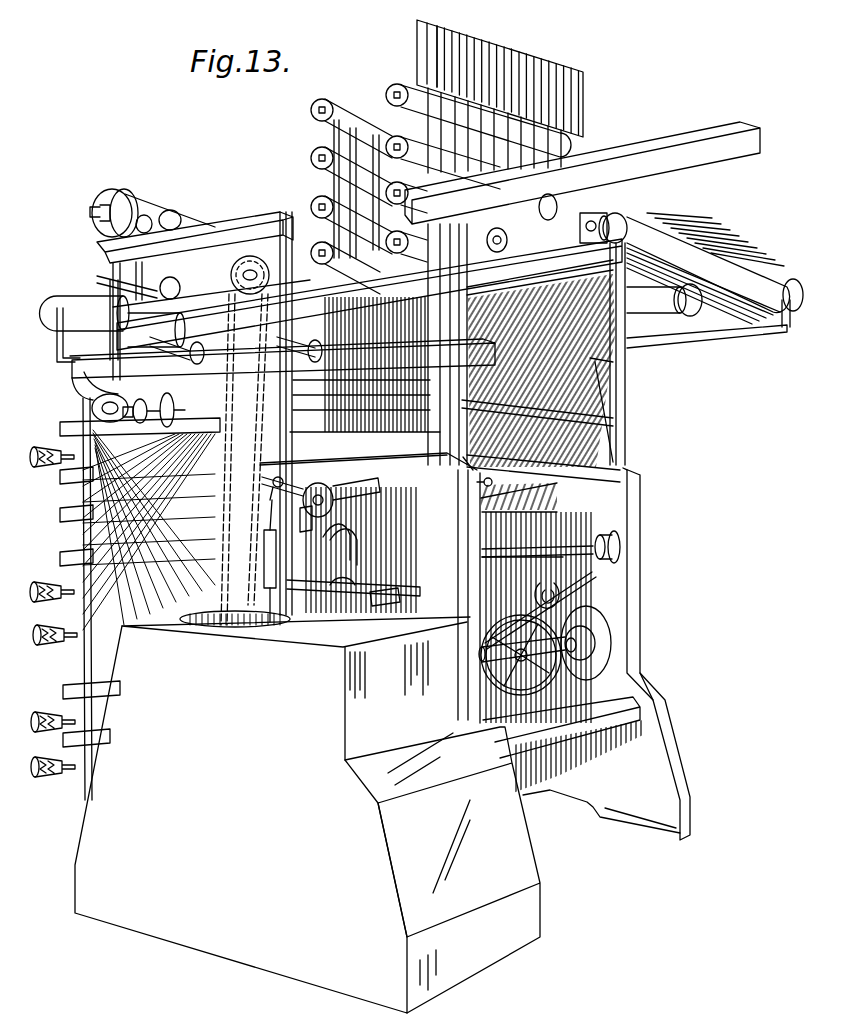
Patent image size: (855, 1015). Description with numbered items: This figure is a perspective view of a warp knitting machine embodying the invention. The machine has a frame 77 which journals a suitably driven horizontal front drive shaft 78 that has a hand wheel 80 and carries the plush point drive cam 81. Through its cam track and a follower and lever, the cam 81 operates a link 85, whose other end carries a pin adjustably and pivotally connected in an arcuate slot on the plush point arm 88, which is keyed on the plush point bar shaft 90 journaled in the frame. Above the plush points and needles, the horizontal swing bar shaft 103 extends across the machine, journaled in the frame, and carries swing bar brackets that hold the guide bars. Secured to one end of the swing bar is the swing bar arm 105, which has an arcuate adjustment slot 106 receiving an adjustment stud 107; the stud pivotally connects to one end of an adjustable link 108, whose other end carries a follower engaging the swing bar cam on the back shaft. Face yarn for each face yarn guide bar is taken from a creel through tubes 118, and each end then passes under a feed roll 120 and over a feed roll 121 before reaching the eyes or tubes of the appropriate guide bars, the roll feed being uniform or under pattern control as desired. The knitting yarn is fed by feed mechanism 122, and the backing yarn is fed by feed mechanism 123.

The frame 77 is at (638, 493).
The front drive shaft 78 is at (563, 745).
The hand wheel 80 is at (640, 670).
The plush point drive cam 81 is at (607, 633).
The link 85 is at (590, 597).
The plush point arm 88 is at (593, 573).
The plush point bar shaft 90 is at (593, 537).
The swing bar shaft 103 is at (348, 480).
The swing bar arm 105 is at (360, 475).
The arcuate adjustment slot 106 is at (310, 473).
The adjustment stud 107 is at (300, 467).
The adjustable link 108 is at (307, 812).
The tubes 118 is at (584, 96).
The feed roll 120 is at (396, 88).
The feed roll 121 is at (316, 156).
The feed mechanism 122 is at (738, 310).
The feed mechanism 123 is at (172, 410).